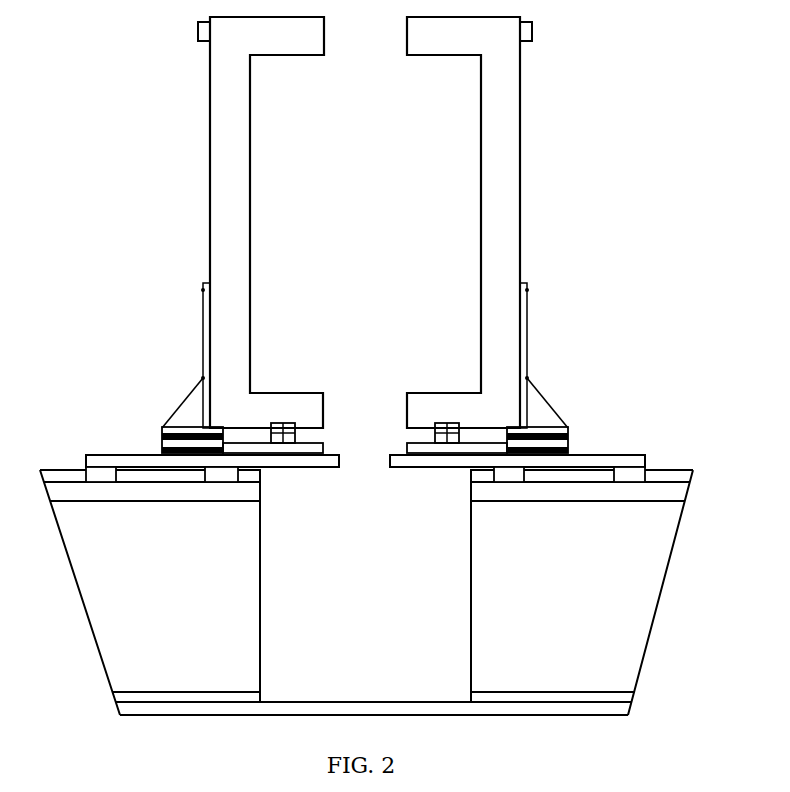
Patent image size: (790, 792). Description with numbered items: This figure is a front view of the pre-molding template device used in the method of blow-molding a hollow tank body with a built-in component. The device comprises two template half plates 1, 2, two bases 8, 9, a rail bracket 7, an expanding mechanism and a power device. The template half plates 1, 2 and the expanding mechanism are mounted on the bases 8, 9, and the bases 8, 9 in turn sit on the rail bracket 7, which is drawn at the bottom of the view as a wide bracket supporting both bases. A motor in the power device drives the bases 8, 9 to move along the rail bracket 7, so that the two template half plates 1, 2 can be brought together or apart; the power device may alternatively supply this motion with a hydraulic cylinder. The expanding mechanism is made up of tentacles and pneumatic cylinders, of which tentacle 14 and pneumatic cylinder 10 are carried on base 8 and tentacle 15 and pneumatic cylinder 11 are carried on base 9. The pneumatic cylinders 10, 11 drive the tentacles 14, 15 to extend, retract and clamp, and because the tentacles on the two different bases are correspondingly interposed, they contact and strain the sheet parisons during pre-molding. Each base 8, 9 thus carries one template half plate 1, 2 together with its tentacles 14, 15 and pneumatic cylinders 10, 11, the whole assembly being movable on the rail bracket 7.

The template half plate 1 is at (224, 174).
The template half plate 2 is at (500, 174).
The rail bracket 7 is at (240, 648).
The base 8 is at (118, 461).
The base 9 is at (603, 461).
The pneumatic cylinder 10 is at (176, 437).
The pneumatic cylinder 11 is at (548, 436).
The tentacle 14 is at (283, 423).
The tentacle 15 is at (447, 423).